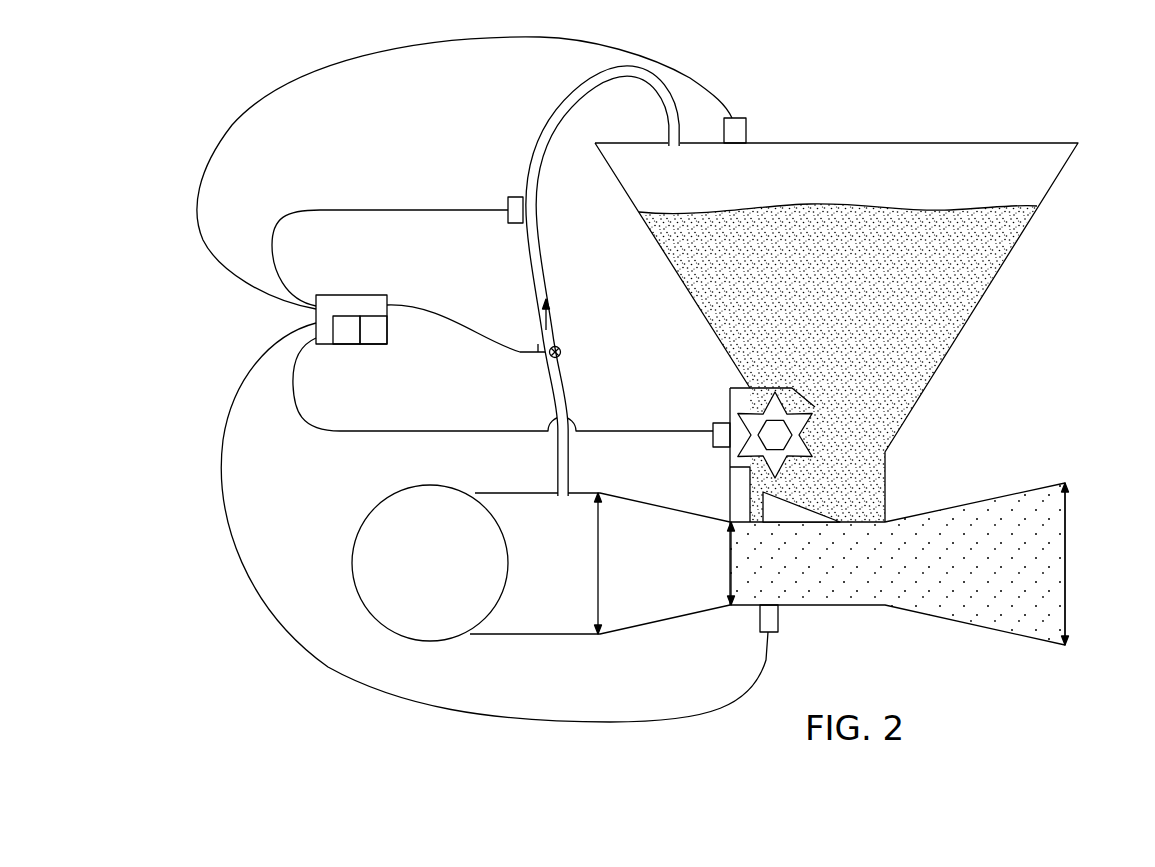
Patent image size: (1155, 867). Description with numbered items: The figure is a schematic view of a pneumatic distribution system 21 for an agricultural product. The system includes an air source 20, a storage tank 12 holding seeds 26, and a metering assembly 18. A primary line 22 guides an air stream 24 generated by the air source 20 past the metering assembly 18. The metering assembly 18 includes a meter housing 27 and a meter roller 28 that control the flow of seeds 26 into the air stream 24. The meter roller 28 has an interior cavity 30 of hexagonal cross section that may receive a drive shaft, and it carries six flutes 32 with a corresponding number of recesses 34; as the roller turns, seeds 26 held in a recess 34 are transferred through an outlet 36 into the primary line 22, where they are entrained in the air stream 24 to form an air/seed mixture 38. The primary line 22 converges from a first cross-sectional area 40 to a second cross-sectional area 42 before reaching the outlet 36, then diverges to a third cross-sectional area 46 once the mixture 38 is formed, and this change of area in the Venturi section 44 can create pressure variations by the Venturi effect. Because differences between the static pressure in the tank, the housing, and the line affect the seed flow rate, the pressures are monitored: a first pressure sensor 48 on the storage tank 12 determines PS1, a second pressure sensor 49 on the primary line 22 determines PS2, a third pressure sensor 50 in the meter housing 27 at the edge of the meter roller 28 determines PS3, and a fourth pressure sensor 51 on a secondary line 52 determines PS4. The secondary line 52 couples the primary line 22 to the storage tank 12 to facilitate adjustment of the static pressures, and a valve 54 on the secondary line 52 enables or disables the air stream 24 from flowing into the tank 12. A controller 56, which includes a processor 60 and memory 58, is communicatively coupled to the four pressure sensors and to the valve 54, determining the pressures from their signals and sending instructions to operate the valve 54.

The pneumatic distribution system 21 is at (240, 92).
The storage tank 12 is at (658, 238).
The seeds 26 is at (985, 292).
The metering assembly 18 is at (718, 385).
The recesses 34 is at (786, 408).
The flutes 32 is at (754, 418).
The interior cavity 30 is at (757, 448).
The meter housing 27 is at (730, 458).
The meter roller 28 is at (815, 436).
The outlet 36 is at (752, 514).
The third pressure sensor 50 is at (712, 443).
The static pressure in the meter housing PS3 is at (740, 432).
The air source 20 is at (430, 486).
The primary line 22 is at (525, 634).
The air stream 24 is at (572, 565).
The first cross-sectional area 40 is at (600, 565).
The Venturi section 44 is at (845, 608).
The air/seed mixture 38 is at (993, 525).
The second cross-sectional area 42 is at (729, 561).
The third cross-sectional area 46 is at (1067, 565).
The second pressure sensor 49 is at (760, 618).
The static pressure in the primary line PS2 is at (788, 594).
The controller 56 is at (354, 295).
The memory 58 is at (343, 345).
The processor 60 is at (388, 332).
The secondary line 52 is at (557, 333).
The valve 54 is at (561, 360).
The fourth pressure sensor 51 is at (507, 225).
The static pressure in the secondary line PS4 is at (555, 118).
The first pressure sensor 48 is at (738, 132).
The static pressure in the storage tank PS1 is at (792, 160).